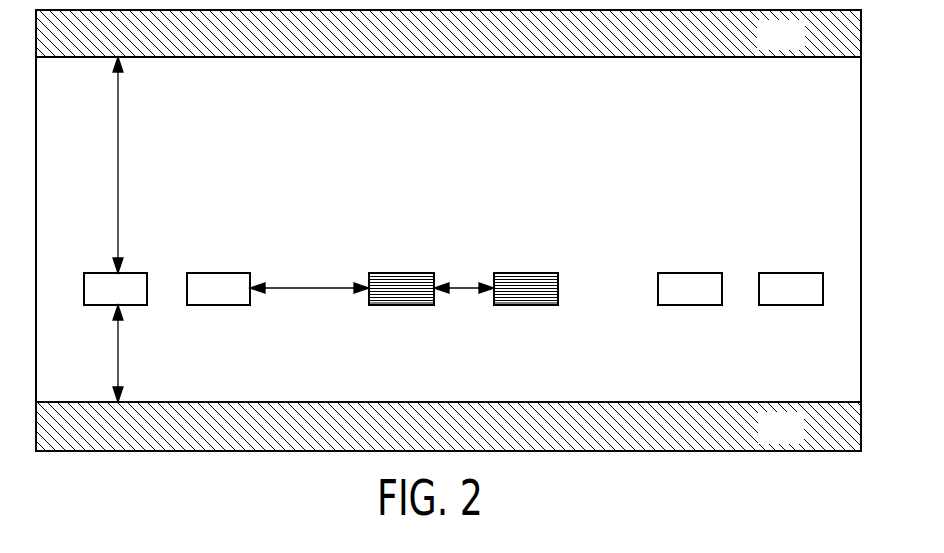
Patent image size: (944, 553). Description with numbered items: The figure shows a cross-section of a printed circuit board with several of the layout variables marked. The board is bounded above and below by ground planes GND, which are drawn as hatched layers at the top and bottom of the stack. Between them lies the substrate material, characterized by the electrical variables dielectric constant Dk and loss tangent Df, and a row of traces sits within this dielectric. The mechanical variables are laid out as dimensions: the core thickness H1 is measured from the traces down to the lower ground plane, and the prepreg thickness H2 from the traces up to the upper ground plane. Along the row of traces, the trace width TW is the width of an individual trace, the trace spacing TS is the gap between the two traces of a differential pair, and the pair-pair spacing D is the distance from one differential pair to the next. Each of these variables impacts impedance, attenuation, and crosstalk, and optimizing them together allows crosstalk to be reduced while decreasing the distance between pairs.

The ground planes (hatched top and bottom layers) GND is at (453, 230).
The dielectric constant Dk is at (448, 229).
The trace width TW is at (408, 235).
The trace spacing TS is at (492, 337).
The prepreg thickness H2 is at (160, 165).
The core thickness H1 is at (94, 353).
The pair-pair spacing D is at (309, 312).